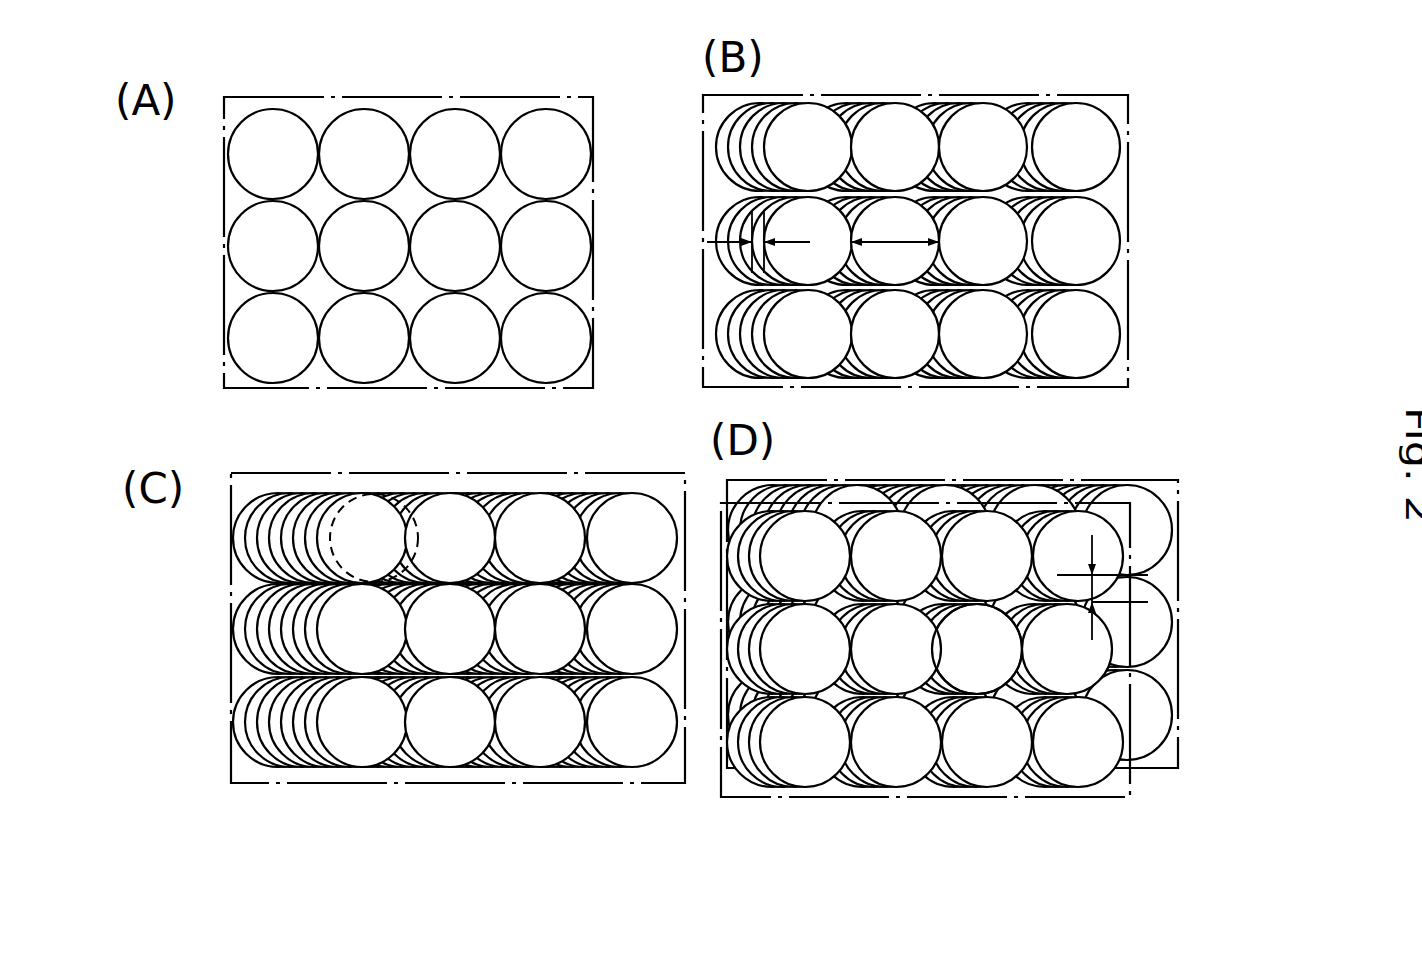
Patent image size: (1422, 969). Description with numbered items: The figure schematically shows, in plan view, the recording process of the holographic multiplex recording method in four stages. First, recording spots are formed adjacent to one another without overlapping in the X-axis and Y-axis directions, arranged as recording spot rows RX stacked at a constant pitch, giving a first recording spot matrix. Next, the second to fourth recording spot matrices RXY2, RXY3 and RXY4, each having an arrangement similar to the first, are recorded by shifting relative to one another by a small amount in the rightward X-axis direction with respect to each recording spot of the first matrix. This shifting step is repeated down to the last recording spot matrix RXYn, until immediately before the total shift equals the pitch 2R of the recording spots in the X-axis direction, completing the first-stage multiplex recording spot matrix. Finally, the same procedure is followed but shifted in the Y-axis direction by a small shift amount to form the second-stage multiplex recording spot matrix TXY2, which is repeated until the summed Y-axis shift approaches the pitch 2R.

The second recording spot matrix RXY2 is at (986, 250).
The third recording spot matrix RXY3 is at (986, 250).
The fourth recording spot matrix RXY4 is at (986, 250).
The last recording spot matrix RXYn is at (233, 764).
The recording spot row RX is at (392, 245).
The pitch of the recording spot 2R is at (895, 231).
The second-stage multiplex recording spot matrix TXY2 is at (752, 799).